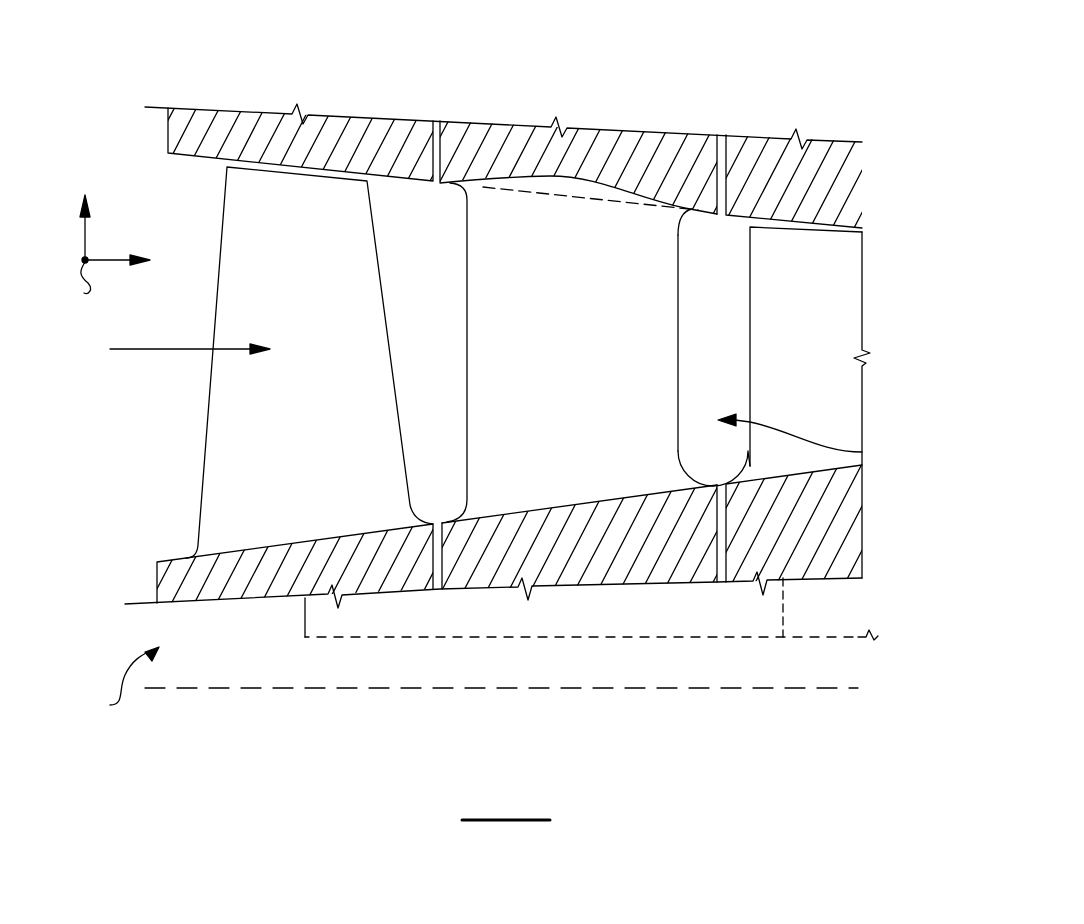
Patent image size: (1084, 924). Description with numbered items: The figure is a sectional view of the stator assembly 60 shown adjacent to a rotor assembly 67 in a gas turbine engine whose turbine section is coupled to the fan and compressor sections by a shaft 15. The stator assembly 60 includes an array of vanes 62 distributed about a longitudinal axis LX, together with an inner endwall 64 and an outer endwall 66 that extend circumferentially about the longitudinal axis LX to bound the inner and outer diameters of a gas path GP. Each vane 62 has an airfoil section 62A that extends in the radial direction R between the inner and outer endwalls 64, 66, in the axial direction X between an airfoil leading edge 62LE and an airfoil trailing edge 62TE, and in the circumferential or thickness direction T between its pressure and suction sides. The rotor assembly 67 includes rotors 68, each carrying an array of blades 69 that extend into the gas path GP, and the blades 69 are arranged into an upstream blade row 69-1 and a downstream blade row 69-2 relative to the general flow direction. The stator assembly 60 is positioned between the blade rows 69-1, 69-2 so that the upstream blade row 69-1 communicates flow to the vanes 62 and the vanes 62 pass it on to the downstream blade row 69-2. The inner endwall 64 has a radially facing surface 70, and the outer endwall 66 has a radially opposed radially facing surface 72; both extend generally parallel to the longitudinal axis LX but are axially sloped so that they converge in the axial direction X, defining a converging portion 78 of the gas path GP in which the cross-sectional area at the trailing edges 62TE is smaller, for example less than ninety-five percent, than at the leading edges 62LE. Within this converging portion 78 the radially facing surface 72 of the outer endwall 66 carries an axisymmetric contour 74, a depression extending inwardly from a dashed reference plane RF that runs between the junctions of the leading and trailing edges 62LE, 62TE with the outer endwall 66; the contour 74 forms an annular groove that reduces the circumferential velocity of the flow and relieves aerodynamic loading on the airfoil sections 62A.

The stator assembly 60 is at (494, 88).
The vane 62 is at (625, 352).
The airfoil section 62A is at (625, 352).
The airfoil leading edge 62LE is at (467, 373).
The airfoil trailing edge 62TE is at (678, 352).
The inner endwall 64 is at (509, 544).
The outer endwall 66 is at (581, 168).
The rotor assembly 67 is at (120, 686).
The rotor 68 is at (175, 587).
The blade 69 is at (523, 285).
The upstream blade row 69-1 is at (289, 92).
The downstream blade row 69-2 is at (812, 102).
The radially facing surface of inner endwall 70 is at (513, 508).
The radially facing surface of outer endwall 72 is at (676, 206).
The axisymmetric contour 74 is at (583, 186).
The converging portion 78 is at (862, 452).
The shaft 15 is at (815, 636).
The reference plane RF is at (585, 196).
The longitudinal axis LX is at (858, 688).
The gas path GP is at (174, 350).
The radial direction R is at (85, 211).
The axial direction X is at (125, 262).
The circumferential direction T is at (78, 284).